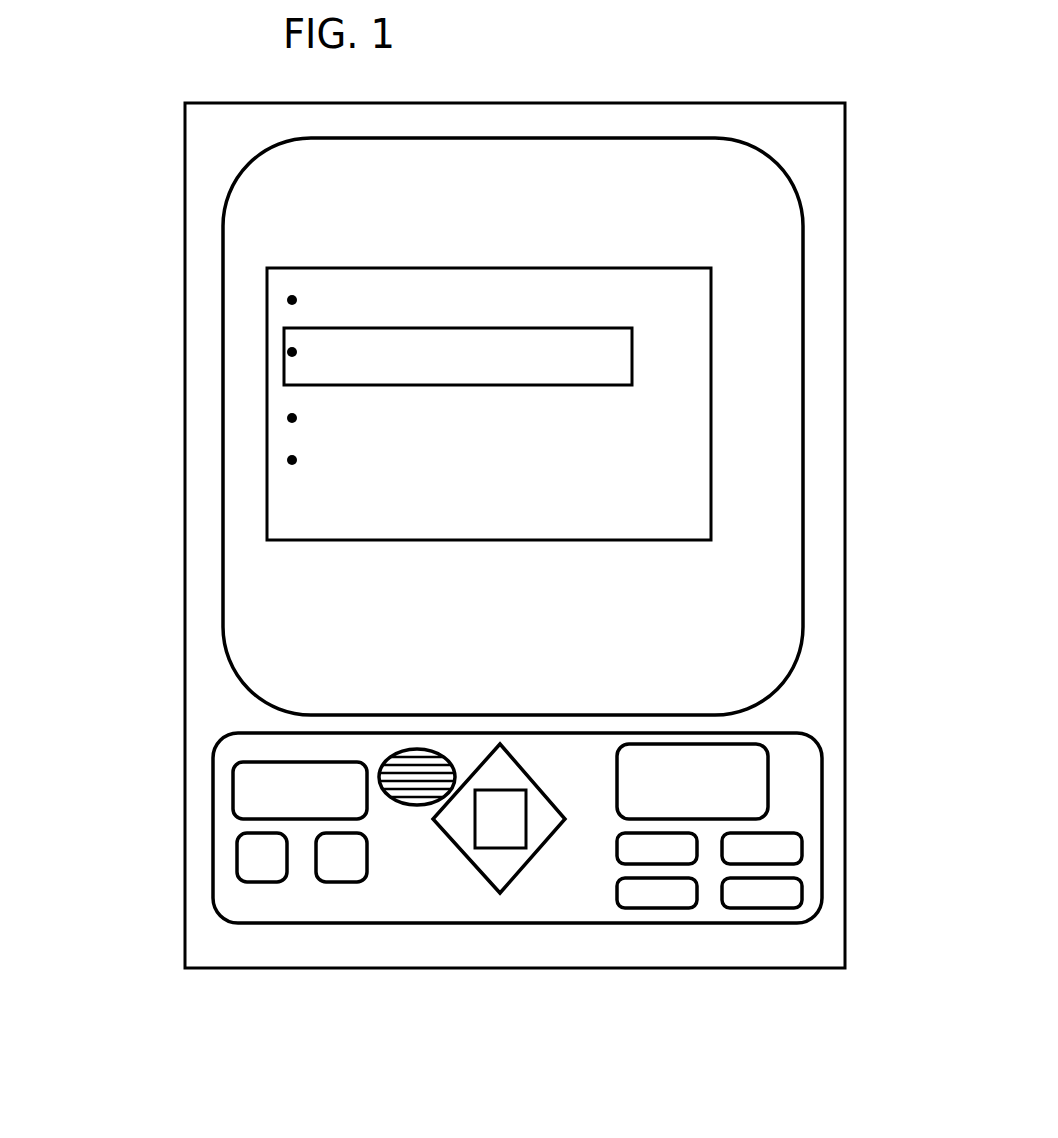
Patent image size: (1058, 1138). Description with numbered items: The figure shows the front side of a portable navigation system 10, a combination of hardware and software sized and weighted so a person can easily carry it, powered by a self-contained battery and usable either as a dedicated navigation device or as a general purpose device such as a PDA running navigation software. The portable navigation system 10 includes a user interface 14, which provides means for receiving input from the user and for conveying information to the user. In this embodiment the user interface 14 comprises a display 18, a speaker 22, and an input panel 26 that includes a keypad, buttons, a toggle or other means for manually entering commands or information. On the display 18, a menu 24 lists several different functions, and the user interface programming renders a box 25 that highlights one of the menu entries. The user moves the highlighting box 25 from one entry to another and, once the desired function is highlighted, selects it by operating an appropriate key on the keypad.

The portable navigation system 10 is at (513, 100).
The user interface 14 is at (232, 660).
The display 18 is at (273, 617).
The speaker 22 is at (387, 753).
The menu 24 is at (258, 285).
The box 25 is at (633, 320).
The input panel 26 is at (397, 898).